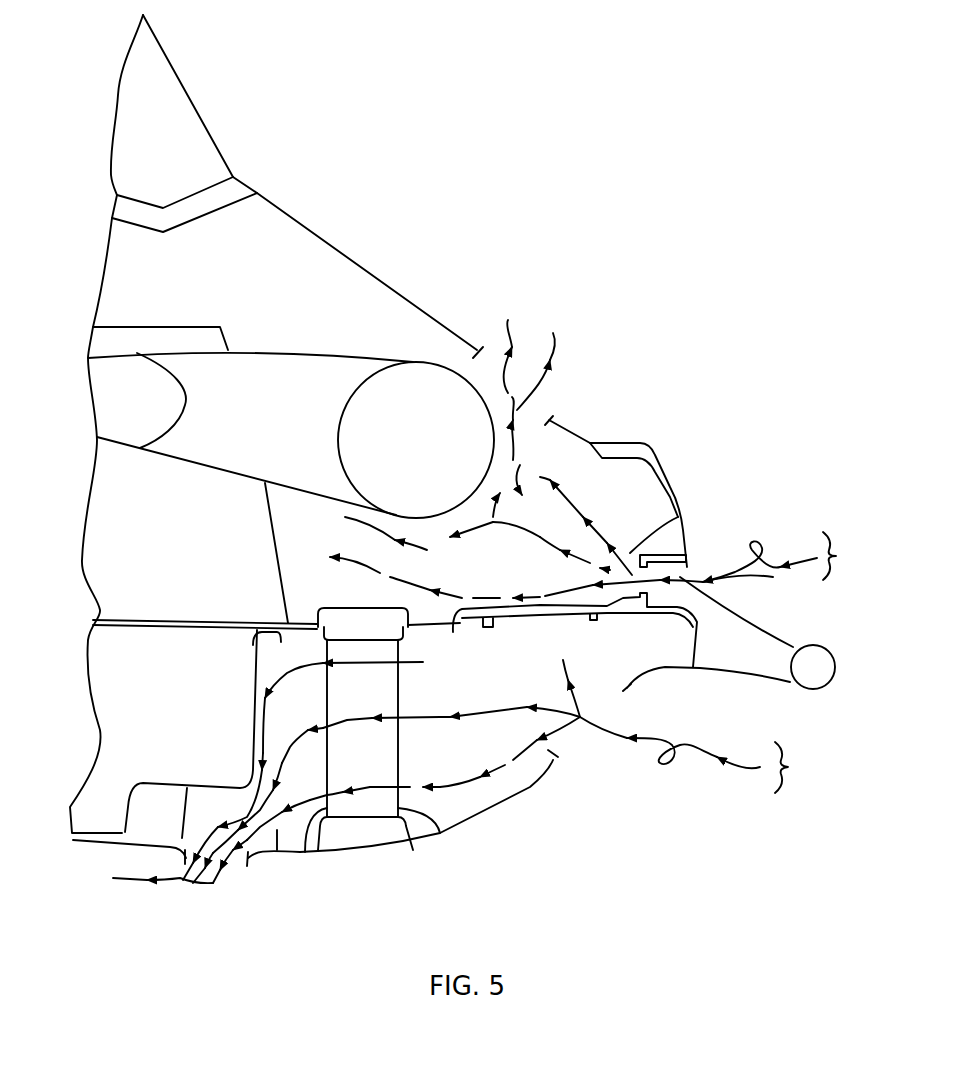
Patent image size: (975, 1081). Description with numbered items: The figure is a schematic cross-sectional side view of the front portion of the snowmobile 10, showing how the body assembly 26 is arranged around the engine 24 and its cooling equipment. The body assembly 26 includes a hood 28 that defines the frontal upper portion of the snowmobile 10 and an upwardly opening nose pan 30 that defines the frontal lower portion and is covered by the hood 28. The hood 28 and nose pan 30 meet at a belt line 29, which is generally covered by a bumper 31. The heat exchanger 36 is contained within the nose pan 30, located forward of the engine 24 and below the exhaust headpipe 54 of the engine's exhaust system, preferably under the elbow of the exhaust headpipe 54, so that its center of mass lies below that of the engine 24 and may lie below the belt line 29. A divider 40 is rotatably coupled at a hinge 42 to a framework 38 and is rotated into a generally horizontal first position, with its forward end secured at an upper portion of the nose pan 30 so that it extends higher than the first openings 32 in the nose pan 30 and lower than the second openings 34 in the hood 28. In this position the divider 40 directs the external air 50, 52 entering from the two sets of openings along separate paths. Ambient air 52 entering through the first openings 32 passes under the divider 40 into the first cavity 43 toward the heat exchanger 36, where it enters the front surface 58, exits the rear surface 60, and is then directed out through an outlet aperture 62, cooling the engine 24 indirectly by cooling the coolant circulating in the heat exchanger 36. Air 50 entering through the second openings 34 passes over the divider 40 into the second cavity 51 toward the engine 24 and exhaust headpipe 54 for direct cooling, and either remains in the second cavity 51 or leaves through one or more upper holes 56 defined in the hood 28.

The snowmobile 10 is at (633, 240).
The engine 24 is at (205, 327).
The body assembly 26 is at (388, 266).
The hood 28 is at (327, 232).
The belt line 29 is at (686, 625).
The nose pan 30 is at (495, 810).
The bumper 31 is at (837, 668).
The first airflow inlet openings 32 is at (570, 745).
The second airflow inlet openings 34 is at (687, 572).
The heat exchanger 36 is at (362, 812).
The framework 38 is at (327, 610).
The divider 40 is at (577, 613).
The hinge 42 is at (360, 587).
The first cavity 43 is at (518, 780).
The external air 50 is at (704, 536).
The second cavity 51 is at (560, 453).
The ambient air 52 is at (698, 755).
The exhaust headpipe 54 is at (347, 353).
The upper holes 56 is at (543, 408).
The front surface 58 is at (430, 817).
The rear surface 60 is at (312, 817).
The outlet aperture 62 is at (237, 867).